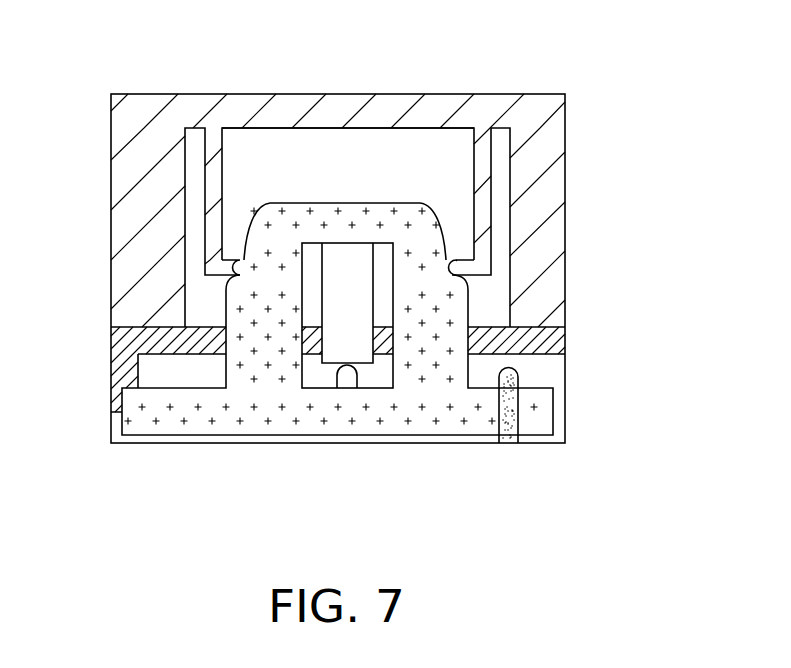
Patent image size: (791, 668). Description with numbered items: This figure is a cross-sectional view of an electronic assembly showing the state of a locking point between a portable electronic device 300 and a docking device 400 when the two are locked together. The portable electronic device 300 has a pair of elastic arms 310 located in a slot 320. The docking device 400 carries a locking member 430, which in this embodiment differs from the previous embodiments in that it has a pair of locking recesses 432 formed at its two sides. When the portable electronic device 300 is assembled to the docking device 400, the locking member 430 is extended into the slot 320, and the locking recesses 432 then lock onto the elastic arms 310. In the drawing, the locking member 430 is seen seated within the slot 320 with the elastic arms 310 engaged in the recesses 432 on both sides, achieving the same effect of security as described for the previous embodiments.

The portable electronic device 300 is at (565, 181).
The elastic arm 310 is at (474, 180).
The slot 320 is at (278, 130).
The docking device 400 is at (111, 352).
The locking member 430 is at (155, 435).
The locking recess 432 is at (448, 270).